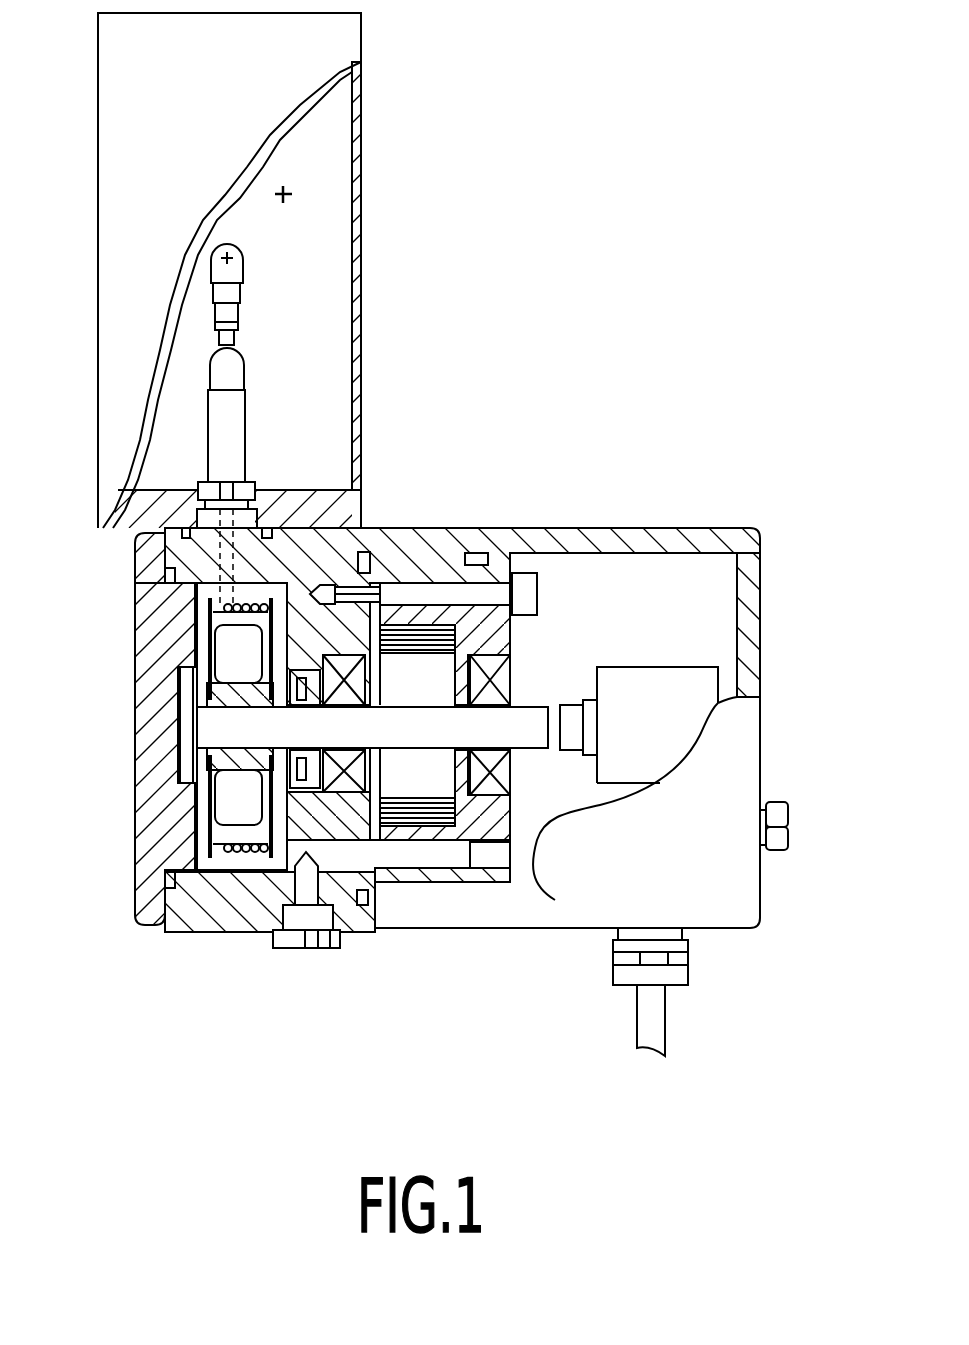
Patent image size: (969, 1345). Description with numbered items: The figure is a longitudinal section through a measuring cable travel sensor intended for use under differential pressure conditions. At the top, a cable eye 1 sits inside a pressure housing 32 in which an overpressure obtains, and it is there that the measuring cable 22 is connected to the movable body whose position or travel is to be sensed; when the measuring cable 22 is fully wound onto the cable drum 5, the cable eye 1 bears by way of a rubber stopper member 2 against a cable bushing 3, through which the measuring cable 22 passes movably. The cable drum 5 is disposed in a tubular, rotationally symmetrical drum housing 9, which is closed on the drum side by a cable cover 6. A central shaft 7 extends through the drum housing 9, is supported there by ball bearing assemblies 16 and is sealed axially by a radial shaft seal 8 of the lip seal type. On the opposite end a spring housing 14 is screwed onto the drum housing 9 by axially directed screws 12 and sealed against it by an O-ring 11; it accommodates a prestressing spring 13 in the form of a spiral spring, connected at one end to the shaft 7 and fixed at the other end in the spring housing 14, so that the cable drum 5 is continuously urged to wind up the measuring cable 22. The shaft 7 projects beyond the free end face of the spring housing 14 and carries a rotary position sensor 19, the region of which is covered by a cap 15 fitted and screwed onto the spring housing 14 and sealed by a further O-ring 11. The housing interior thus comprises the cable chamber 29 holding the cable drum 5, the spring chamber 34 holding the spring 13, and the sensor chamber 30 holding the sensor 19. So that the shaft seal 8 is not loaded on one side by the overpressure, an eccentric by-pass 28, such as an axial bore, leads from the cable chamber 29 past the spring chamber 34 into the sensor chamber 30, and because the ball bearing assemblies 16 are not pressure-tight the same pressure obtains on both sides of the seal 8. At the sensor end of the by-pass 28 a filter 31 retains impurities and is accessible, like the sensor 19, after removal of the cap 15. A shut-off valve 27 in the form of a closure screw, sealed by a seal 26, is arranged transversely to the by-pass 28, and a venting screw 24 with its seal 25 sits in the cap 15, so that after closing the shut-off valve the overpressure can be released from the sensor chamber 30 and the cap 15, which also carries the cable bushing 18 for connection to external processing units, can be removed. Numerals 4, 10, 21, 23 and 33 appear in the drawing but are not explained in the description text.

The cable eye 1 is at (222, 272).
The rubber stopper member 2 is at (205, 428).
The cable bushing 3 is at (195, 490).
The housing top wall 4 is at (165, 552).
The cable drum 5 is at (243, 765).
The cable cover 6 is at (157, 703).
The central shaft 7 is at (237, 722).
The radial shaft seal 8 is at (298, 745).
The drum housing 9 is at (188, 915).
The sensor base 10 is at (278, 500).
The O-ring 11 is at (483, 552).
The screws 12 is at (532, 572).
The prestressing spring 13 is at (472, 868).
The spring housing 14 is at (425, 895).
The cap 15 is at (752, 907).
The ball bearing assemblies 16 is at (492, 712).
The cable bushing 18 is at (668, 972).
The rotary position sensor 19 is at (648, 762).
The upper wall portion 21 is at (165, 593).
The measuring cable 22 is at (215, 628).
The tank housing 23 is at (335, 320).
The venting screw 24 is at (789, 815).
The seal 25 is at (762, 812).
The seal 26 is at (320, 910).
The shut-off valve 27 is at (300, 905).
The eccentric by-pass 28 is at (383, 900).
The cable chamber 29 is at (256, 862).
The sensor chamber 30 is at (656, 628).
The filter 31 is at (594, 812).
The pressure housing 32 is at (362, 148).
The pressure chamber 33 is at (321, 287).
The spring chamber 34 is at (468, 808).